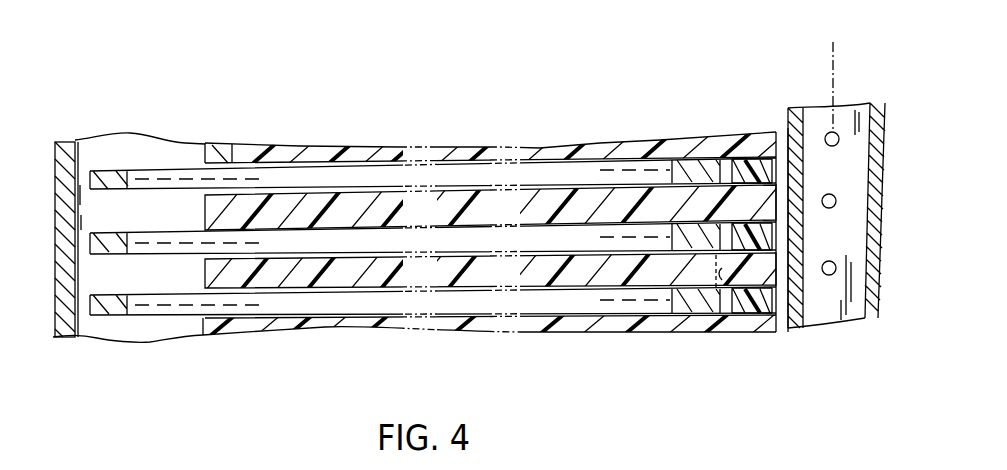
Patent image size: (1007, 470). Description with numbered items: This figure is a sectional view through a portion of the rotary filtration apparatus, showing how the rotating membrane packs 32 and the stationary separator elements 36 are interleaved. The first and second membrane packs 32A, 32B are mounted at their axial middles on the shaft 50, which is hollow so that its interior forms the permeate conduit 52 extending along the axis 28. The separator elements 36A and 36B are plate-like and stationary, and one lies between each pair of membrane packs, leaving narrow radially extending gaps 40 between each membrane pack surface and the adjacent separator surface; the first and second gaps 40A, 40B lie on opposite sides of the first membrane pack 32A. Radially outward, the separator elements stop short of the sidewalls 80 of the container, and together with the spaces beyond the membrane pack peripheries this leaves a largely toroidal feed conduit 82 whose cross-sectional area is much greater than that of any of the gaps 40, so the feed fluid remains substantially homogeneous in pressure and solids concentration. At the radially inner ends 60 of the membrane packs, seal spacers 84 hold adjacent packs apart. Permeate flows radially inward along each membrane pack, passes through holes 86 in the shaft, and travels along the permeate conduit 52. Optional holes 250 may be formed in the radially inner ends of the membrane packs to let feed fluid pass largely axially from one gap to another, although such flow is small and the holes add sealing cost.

The axis 28 is at (803, 152).
The membrane packs 32 is at (352, 190).
The first membrane pack 32A is at (205, 268).
The second membrane pack 32B is at (270, 330).
The separator elements 36 is at (228, 153).
The separator element 36A is at (80, 332).
The separator element 36B is at (205, 320).
The gaps 40 is at (312, 100).
The first gap 40A is at (563, 253).
The second gap 40B is at (623, 290).
The shaft 50 is at (826, 213).
The permeate conduit 52 is at (860, 302).
The radially inner ends 60 is at (775, 155).
The sidewalls 80 is at (67, 140).
The feed conduit 82 is at (83, 175).
The seal spacers 84 is at (742, 160).
The holes 86 is at (800, 272).
The holes 250 is at (723, 333).